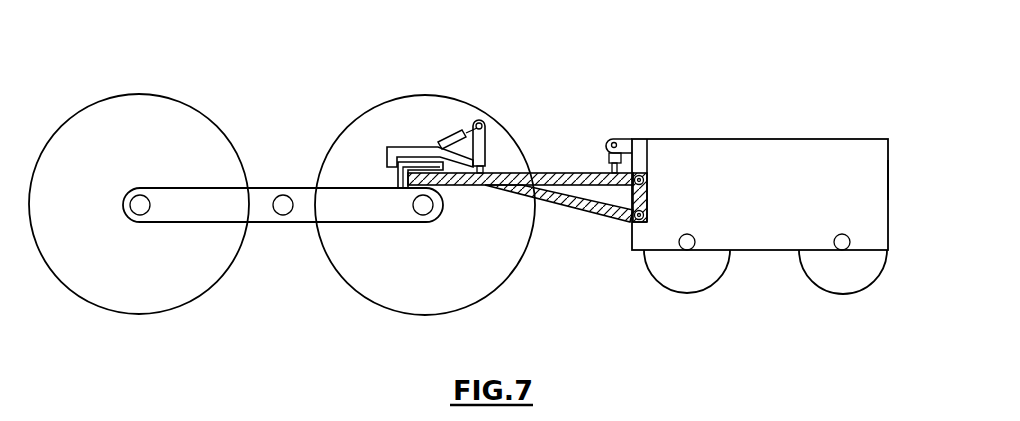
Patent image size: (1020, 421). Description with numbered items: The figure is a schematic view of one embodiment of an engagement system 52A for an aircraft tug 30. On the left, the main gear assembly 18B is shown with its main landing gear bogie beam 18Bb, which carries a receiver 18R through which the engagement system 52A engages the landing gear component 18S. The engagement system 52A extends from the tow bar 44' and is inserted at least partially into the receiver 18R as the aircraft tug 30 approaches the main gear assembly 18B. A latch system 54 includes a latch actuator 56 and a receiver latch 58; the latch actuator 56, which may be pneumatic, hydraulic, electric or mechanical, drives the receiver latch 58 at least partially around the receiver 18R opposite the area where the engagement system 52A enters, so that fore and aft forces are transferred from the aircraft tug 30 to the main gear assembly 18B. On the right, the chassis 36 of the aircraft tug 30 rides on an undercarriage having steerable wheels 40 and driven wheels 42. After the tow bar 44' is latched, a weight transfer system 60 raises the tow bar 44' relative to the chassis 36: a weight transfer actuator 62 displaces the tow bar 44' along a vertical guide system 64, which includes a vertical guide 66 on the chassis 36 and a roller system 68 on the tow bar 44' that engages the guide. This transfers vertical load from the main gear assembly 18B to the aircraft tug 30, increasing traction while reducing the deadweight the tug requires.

The main gear assembly 18B is at (208, 72).
The main landing gear bogie beam 18Bb is at (355, 203).
The landing gear component 18S is at (263, 220).
The receiver 18R is at (397, 178).
The engagement system 52A is at (478, 202).
The latch system 54 is at (456, 106).
The latch actuator 56 is at (470, 118).
The receiver latch 58 is at (417, 148).
The tow bar 44' is at (520, 171).
The aircraft tug 30 is at (822, 138).
The chassis 36 is at (782, 222).
The weight transfer system 60 is at (661, 104).
The weight transfer actuator 62 is at (608, 148).
The vertical guide system 64 is at (650, 193).
The vertical guide 66 is at (650, 184).
The roller system 68 is at (647, 180).
The driven wheels 42 is at (690, 277).
The steerable wheels 40 is at (857, 277).